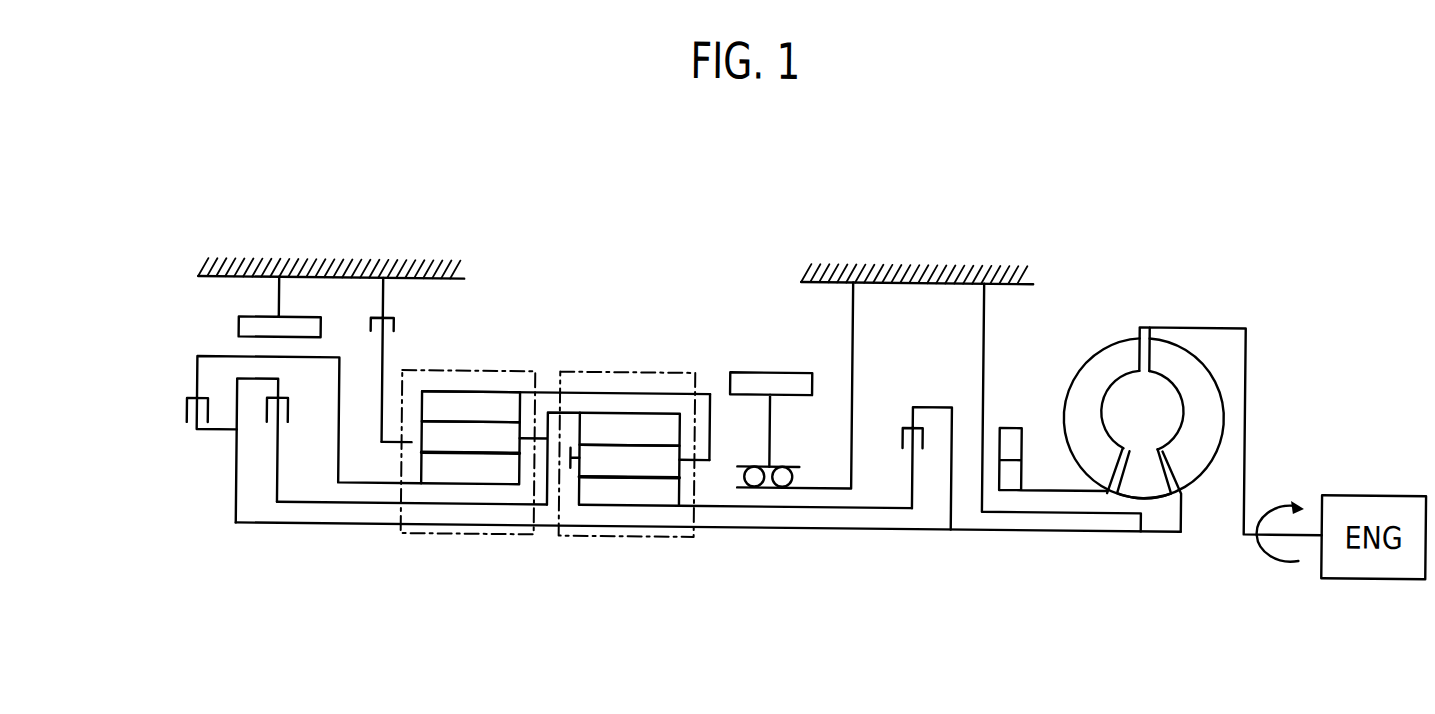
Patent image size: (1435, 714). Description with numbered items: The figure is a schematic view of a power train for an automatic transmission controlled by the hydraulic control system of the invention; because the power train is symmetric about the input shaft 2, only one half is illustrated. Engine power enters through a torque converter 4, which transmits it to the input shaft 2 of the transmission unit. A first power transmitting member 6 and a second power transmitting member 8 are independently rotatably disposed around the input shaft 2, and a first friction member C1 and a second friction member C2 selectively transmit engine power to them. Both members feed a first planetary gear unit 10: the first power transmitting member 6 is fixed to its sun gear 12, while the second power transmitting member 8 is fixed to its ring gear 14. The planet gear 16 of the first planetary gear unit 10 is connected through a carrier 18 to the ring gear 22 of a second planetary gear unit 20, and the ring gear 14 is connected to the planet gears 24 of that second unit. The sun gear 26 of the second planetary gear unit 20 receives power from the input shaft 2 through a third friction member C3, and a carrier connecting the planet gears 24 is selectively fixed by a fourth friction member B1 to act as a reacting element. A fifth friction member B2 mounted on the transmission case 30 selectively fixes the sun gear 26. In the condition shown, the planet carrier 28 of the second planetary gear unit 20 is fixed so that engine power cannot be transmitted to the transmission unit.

The input shaft 2 is at (850, 527).
The torque converter 4 is at (1123, 327).
The first power transmitting member 6 is at (768, 506).
The second power transmitting member 8 is at (338, 506).
The first planetary gear unit 10 is at (627, 478).
The sun gear 12 is at (661, 490).
The ring gear 14 is at (610, 426).
The planet gear 16 is at (662, 455).
The carrier 18 is at (711, 425).
The second planetary gear unit 20 is at (468, 476).
The ring gear 22 is at (452, 402).
The planet gears 24 is at (500, 434).
The sun gear 26 is at (471, 475).
The planet carrier 28 is at (392, 447).
The transmission case 30 is at (330, 264).
The fourth friction member B1 is at (402, 360).
The fifth friction member B2 is at (256, 310).
The first friction member C1 is at (1002, 407).
The second friction member C2 is at (285, 450).
The third friction member C3 is at (279, 419).